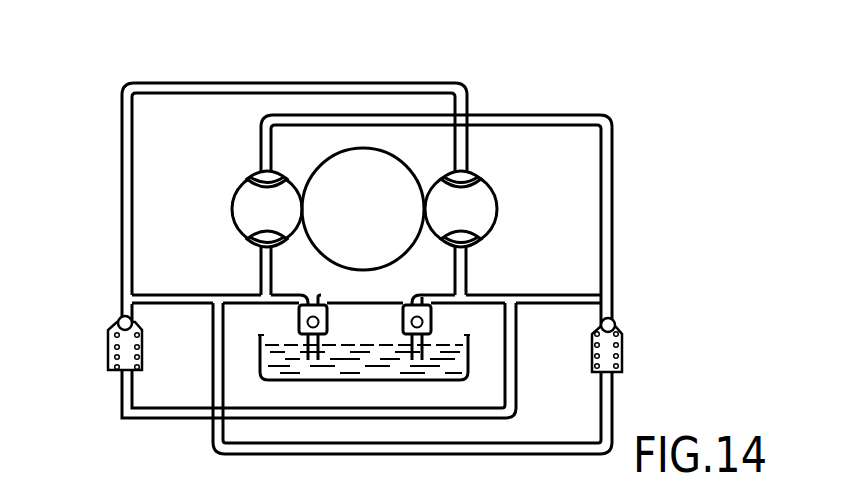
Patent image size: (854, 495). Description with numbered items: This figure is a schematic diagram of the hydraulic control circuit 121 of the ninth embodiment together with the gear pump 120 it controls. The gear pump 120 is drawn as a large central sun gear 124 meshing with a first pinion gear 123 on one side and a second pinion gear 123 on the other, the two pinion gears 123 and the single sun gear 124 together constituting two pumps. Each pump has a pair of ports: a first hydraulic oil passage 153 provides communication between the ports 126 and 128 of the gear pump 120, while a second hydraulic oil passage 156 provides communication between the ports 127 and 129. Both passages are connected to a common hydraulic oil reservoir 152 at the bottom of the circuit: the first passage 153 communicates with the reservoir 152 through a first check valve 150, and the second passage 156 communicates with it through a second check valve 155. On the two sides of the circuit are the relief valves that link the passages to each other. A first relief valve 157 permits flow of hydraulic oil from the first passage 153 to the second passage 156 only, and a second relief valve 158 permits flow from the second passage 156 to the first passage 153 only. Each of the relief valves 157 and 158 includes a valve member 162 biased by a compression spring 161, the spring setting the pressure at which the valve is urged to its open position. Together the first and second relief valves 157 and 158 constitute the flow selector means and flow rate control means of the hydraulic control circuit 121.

The gear pump 120 is at (400, 153).
The hydraulic control circuit 121 is at (369, 268).
The pinion gear 123 is at (235, 198).
The sun gear 124 is at (361, 271).
The port 126 is at (248, 239).
The port 127 is at (253, 173).
The port 128 is at (480, 177).
The port 129 is at (484, 243).
The first check valve 150 is at (299, 323).
The hydraulic oil reservoir 152 is at (361, 371).
The first hydraulic oil passage 153 is at (121, 155).
The second check valve 155 is at (431, 323).
The second hydraulic oil passage 156 is at (612, 137).
The first relief valve 157 is at (110, 342).
The second relief valve 158 is at (623, 352).
The compression spring 161 is at (112, 362).
The valve member 162 is at (121, 320).